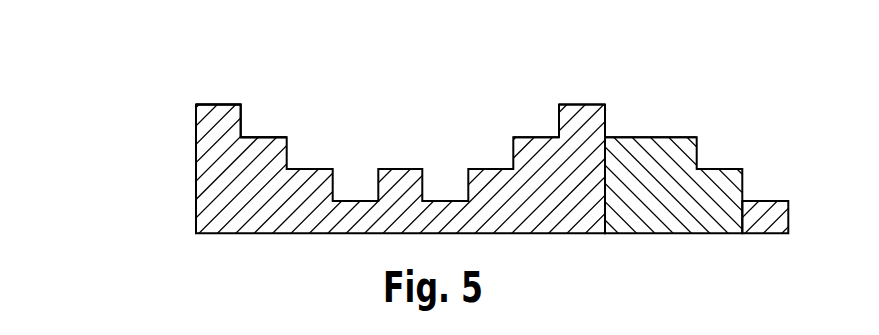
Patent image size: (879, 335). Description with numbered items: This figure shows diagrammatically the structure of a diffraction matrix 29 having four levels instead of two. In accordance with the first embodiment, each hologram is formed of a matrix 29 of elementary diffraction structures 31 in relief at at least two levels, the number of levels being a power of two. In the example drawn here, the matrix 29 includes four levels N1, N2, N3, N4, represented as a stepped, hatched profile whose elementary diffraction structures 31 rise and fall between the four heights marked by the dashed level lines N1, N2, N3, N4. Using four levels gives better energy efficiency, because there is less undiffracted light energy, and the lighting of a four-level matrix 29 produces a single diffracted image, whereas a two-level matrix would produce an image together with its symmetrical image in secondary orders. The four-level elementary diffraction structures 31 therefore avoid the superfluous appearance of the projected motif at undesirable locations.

The matrix 29 is at (146, 237).
The elementary diffraction structures 31 is at (268, 120).
The first level N1 is at (434, 196).
The second level N2 is at (411, 164).
The third level N3 is at (389, 133).
The fourth level N4 is at (343, 99).